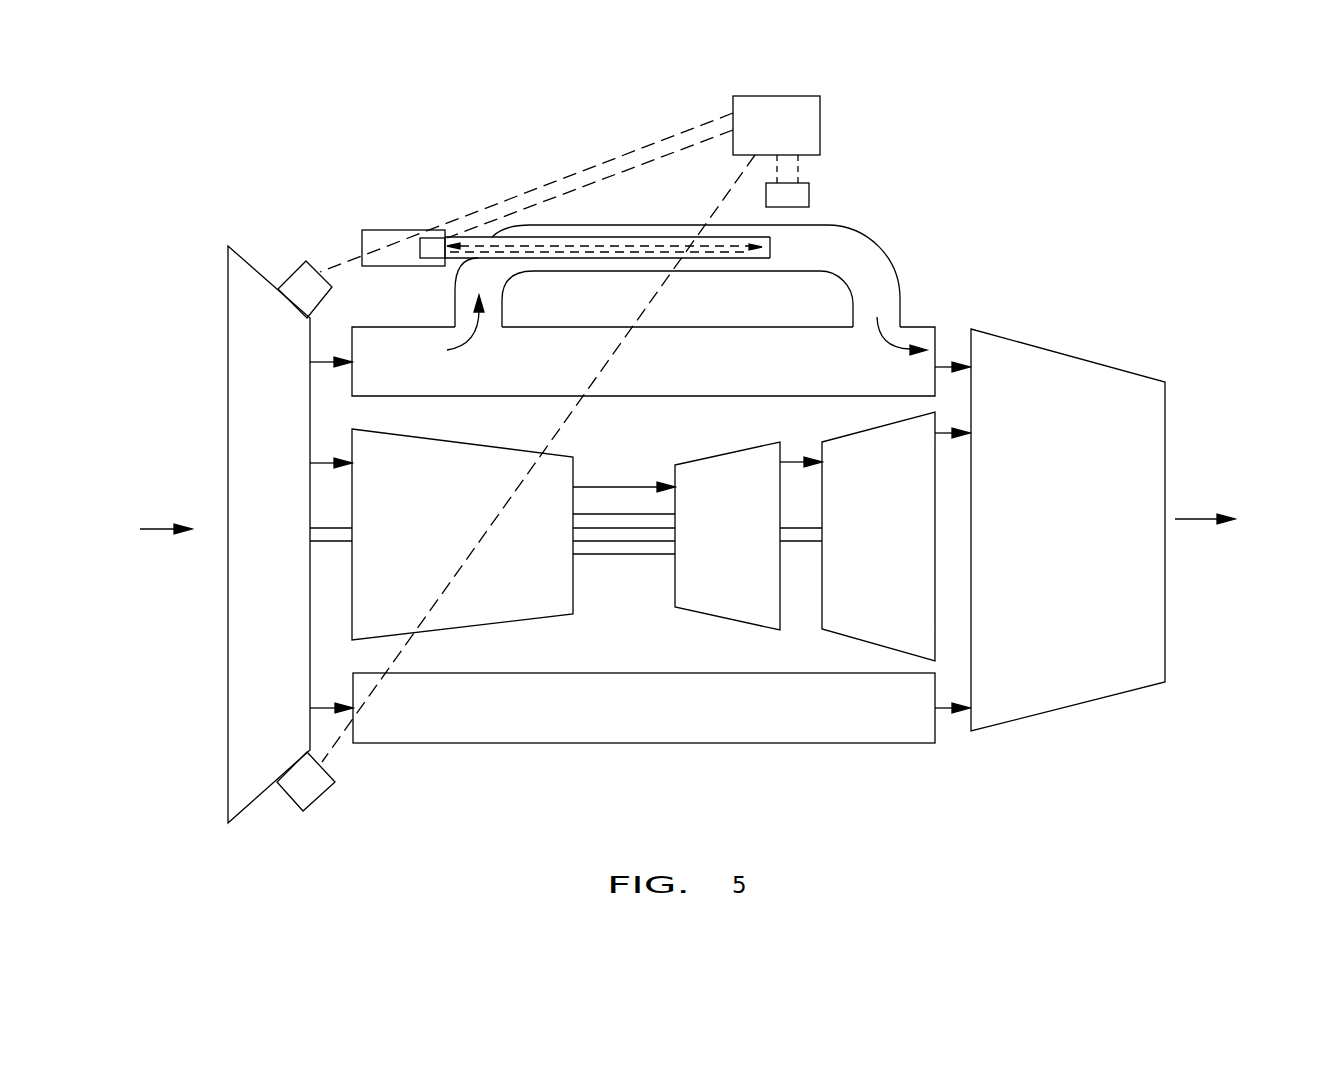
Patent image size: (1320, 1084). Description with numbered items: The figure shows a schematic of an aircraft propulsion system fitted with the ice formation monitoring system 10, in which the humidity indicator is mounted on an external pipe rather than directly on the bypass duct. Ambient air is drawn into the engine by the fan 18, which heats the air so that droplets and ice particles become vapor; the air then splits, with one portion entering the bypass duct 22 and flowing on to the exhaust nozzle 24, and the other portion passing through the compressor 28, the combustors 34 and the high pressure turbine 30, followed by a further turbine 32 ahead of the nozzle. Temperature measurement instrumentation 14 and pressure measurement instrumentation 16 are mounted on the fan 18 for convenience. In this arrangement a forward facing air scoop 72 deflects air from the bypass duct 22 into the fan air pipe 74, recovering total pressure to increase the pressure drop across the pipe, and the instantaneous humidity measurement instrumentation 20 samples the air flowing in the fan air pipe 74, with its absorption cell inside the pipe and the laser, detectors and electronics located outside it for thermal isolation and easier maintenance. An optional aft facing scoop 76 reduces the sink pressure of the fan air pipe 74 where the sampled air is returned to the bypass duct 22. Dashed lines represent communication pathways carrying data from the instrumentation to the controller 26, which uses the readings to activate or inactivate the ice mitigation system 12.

The system for monitoring the conditions for ice formation 10 is at (1048, 207).
The ice mitigation system 12 is at (793, 197).
The temperature measurement instrumentation 14 is at (300, 286).
The pressure measurement instrumentation 16 is at (325, 792).
The engine fan 18 is at (248, 803).
The instantaneous humidity measurement instrumentation 20 is at (418, 250).
The bypass duct 22 is at (760, 323).
The exhaust nozzle 24 is at (1045, 712).
The controller 26 is at (820, 110).
The compressor 28 is at (453, 625).
The high pressure turbine 30 is at (742, 620).
The low pressure turbine 32 is at (855, 640).
The combustors 34 is at (625, 556).
The air scoop 72 is at (470, 358).
The fan air pipe 74 is at (810, 225).
The aft facing scoop 76 is at (887, 358).